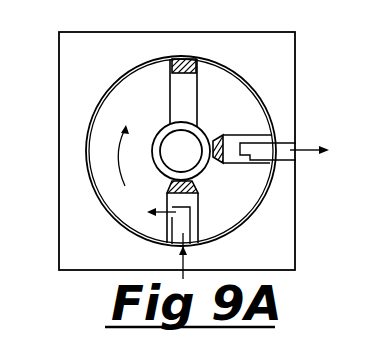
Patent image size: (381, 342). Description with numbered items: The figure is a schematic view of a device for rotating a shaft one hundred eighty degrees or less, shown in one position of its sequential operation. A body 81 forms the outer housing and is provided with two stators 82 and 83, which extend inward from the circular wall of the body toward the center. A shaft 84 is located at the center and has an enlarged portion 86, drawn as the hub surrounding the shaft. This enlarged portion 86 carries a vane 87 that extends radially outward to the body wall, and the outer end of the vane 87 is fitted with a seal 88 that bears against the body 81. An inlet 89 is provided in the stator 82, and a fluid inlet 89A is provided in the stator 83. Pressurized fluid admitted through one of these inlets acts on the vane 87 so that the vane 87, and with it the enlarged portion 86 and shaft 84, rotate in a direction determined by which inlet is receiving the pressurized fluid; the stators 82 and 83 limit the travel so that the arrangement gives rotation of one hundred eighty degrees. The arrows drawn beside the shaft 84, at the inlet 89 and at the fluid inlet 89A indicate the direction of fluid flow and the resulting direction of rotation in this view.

The body 81 is at (65, 185).
The stator 82 is at (190, 217).
The stator 83 is at (233, 140).
The shaft 84 is at (179, 153).
The enlarged portion 86 is at (170, 123).
The vane 87 is at (188, 100).
The seal 88 is at (185, 58).
The inlet 89 is at (182, 268).
The fluid inlet 89A is at (303, 150).